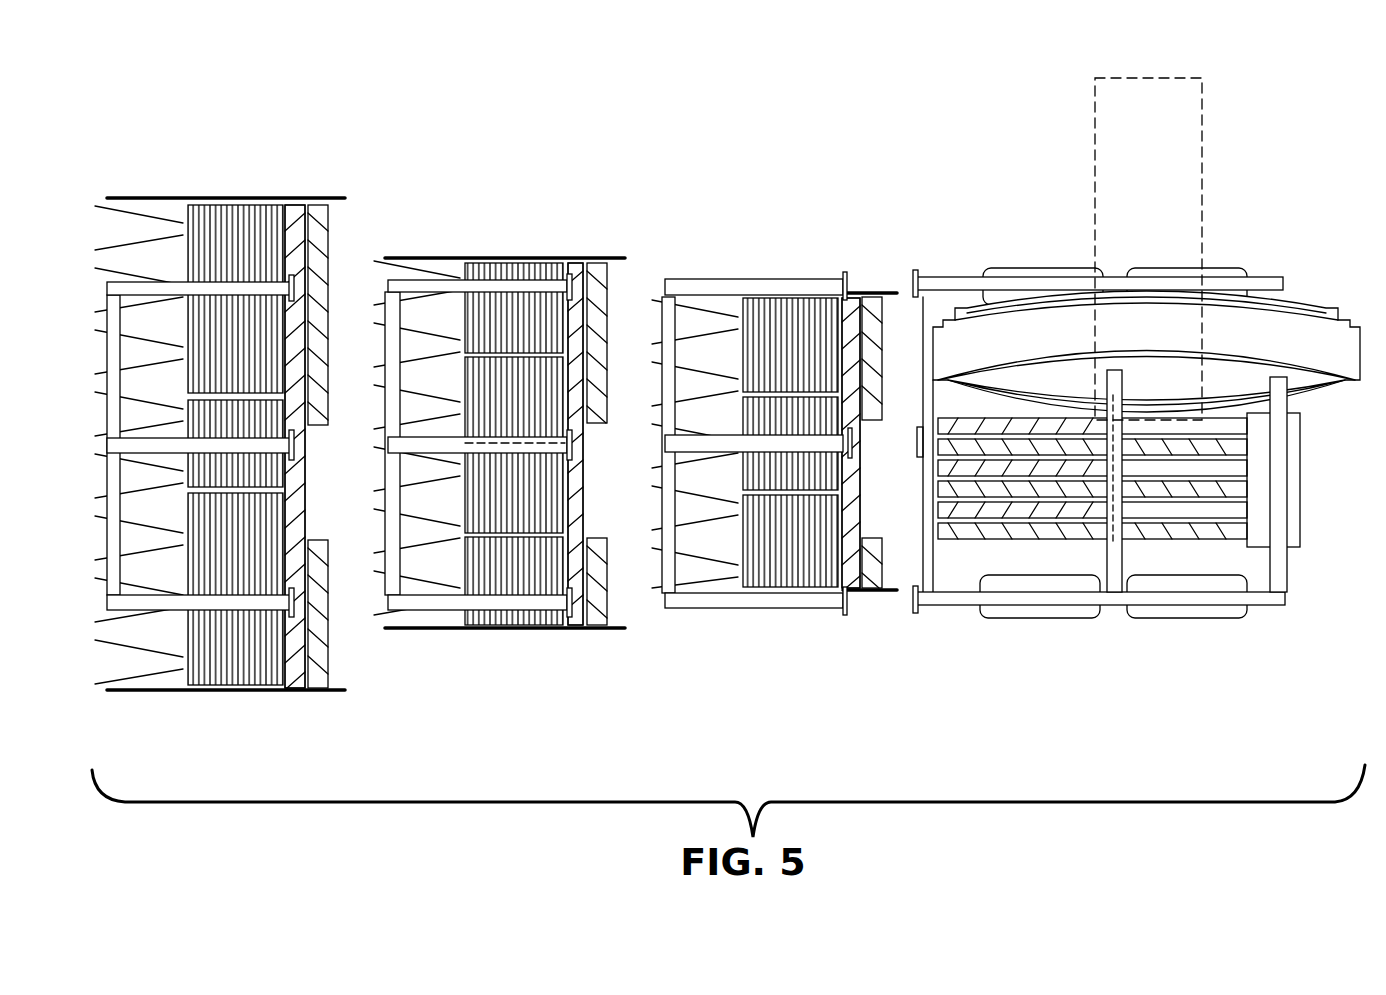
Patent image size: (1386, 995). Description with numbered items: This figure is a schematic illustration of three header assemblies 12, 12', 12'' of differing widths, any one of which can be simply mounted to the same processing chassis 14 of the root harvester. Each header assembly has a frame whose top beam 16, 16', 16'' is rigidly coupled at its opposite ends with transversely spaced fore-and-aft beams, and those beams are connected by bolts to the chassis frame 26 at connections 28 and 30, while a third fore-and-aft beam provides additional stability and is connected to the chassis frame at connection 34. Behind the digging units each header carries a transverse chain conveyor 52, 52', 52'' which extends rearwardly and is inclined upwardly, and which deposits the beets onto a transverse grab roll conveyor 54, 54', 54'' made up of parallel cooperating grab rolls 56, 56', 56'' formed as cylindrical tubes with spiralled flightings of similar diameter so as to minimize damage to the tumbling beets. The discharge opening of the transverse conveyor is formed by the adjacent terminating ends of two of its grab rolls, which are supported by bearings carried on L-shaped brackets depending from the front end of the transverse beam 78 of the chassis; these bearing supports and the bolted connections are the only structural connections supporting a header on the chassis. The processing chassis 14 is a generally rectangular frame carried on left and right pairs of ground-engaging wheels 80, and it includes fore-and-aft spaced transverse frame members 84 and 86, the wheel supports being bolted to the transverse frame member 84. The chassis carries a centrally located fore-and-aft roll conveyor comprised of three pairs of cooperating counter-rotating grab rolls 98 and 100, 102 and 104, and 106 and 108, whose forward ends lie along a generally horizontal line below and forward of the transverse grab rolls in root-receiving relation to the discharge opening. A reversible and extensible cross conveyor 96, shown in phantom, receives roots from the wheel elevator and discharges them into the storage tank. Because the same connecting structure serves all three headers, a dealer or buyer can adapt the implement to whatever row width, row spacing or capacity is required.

The header assembly 12 is at (759, 430).
The header assembly 12' is at (509, 424).
The header assembly 12'' is at (229, 395).
The processing chassis 14 is at (1119, 375).
The top beam 16 is at (683, 469).
The top beam 16' is at (417, 438).
The top beam 16'' is at (139, 445).
The chassis frame 26 is at (965, 266).
The bolted connection 28 is at (929, 282).
The bolted connection 30 is at (925, 608).
The bolted connection 34 is at (917, 431).
The transverse chain conveyor 52 is at (761, 442).
The transverse chain conveyor 52' is at (482, 444).
The transverse chain conveyor 52'' is at (202, 445).
The transverse grab roll conveyor 54 is at (869, 398).
The transverse grab roll conveyor 54' is at (606, 397).
The transverse grab roll conveyor 54'' is at (318, 400).
The grab roll 56 is at (876, 443).
The grab roll 56' is at (603, 444).
The grab roll 56'' is at (322, 446).
The transverse beam 78 is at (921, 396).
The ground-engaging wheels 80 is at (1229, 272).
The transverse frame member 84 is at (1113, 558).
The transverse frame member 86 is at (1280, 569).
The cross conveyor 96 is at (1212, 192).
The grab roll 98 is at (1055, 427).
The grab roll 100 is at (990, 443).
The grab roll 102 is at (972, 467).
The grab roll 104 is at (1015, 490).
The grab roll 106 is at (1076, 510).
The grab roll 108 is at (1182, 524).